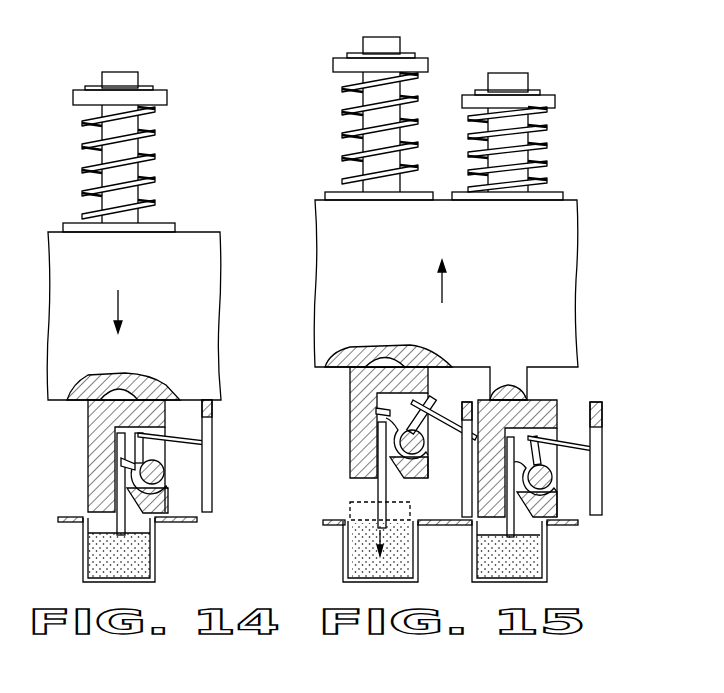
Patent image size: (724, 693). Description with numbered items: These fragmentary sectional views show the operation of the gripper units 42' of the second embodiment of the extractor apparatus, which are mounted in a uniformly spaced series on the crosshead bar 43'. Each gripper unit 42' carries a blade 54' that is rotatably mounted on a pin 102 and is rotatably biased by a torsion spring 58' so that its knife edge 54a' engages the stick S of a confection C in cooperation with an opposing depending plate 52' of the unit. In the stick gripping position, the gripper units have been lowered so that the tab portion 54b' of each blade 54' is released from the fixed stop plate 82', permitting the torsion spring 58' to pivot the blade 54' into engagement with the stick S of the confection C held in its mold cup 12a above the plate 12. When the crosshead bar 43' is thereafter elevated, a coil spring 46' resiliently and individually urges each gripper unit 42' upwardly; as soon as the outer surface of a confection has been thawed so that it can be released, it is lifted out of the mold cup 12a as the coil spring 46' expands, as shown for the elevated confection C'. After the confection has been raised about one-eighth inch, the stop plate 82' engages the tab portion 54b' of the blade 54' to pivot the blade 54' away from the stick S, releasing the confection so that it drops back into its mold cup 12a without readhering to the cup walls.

In FIG. 14, the coil spring 46' is at (133, 147).
In FIG. 15, the coil spring 46' is at (444, 114).
In FIG. 14, the crosshead bar 43' is at (134, 311).
In FIG. 15, the crosshead bar 43' is at (446, 296).
In FIG. 14, the gripper unit 42' is at (92, 456).
In FIG. 15, the gripper unit 42' is at (450, 438).
In FIG. 14, the depending plate 52' is at (95, 498).
In FIG. 15, the depending plate 52' is at (424, 481).
In FIG. 14, the blade 54' is at (95, 463).
In FIG. 15, the blade 54' is at (463, 445).
In FIG. 14, the knife edge 54a' is at (78, 456).
In FIG. 15, the knife edge 54a' is at (341, 411).
In FIG. 14, the tab portion 54b' is at (200, 438).
In FIG. 15, the tab portion 54b' is at (505, 413).
In FIG. 14, the torsion spring 58' is at (208, 456).
In FIG. 15, the torsion spring 58' is at (525, 459).
In FIG. 14, the stop plate 82' is at (229, 410).
In FIG. 15, the stop plate 82' is at (548, 384).
In FIG. 14, the pin 102 is at (169, 466).
In FIG. 15, the pin 102 is at (494, 459).
In FIG. 14, the base plate 12 is at (57, 518).
In FIG. 15, the base plate 12 is at (325, 522).
In FIG. 14, the mold cup 12a is at (156, 564).
In FIG. 15, the mold cup 12a is at (467, 560).
In FIG. 14, the stick S is at (119, 528).
In FIG. 15, the stick S is at (378, 487).
In FIG. 14, the confection C is at (98, 556).
In FIG. 15, the confection C is at (525, 556).
In FIG. 15, the elevated confection C' is at (355, 550).